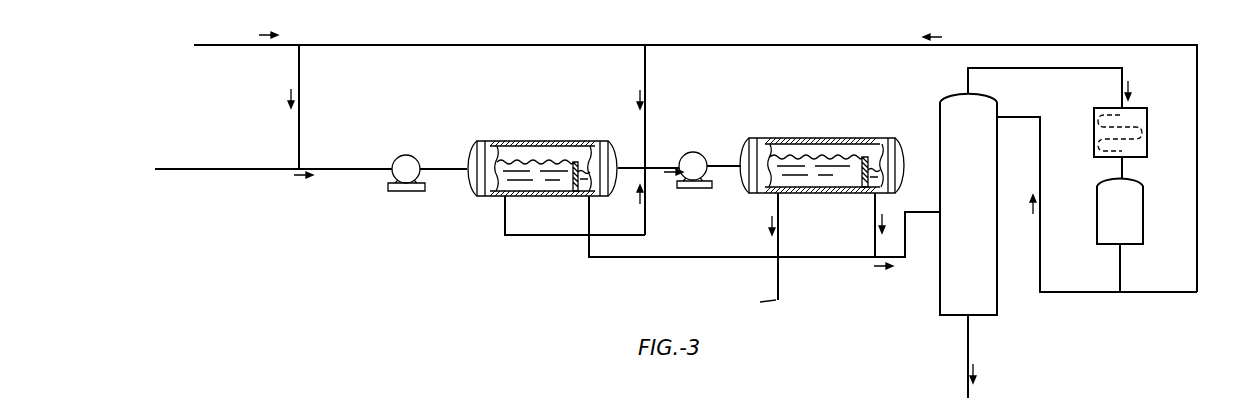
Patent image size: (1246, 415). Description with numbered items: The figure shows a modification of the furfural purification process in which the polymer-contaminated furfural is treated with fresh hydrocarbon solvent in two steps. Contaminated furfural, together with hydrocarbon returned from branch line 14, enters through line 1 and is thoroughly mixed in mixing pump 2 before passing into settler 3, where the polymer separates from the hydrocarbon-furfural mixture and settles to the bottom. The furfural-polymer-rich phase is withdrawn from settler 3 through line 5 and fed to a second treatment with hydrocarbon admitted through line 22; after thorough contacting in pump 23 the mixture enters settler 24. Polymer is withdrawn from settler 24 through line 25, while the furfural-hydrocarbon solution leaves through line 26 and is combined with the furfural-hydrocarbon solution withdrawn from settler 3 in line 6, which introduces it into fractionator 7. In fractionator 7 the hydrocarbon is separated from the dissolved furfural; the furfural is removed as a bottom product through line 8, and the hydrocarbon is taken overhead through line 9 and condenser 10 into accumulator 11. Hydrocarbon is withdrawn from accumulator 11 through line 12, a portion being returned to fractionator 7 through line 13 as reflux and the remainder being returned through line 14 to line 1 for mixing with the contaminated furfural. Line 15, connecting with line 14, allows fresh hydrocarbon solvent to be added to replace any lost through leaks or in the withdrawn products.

The line 1 is at (205, 170).
The mixing pump 2 is at (416, 158).
The settler 3 is at (538, 141).
The line 5 is at (538, 237).
The line 6 is at (685, 258).
The fractionator 7 is at (935, 285).
The line 8 is at (967, 341).
The line 9 is at (1085, 70).
The condenser 10 is at (1147, 130).
The accumulator 11 is at (1097, 198).
The line 12 is at (1118, 255).
The line 13 is at (1077, 293).
The line 14 is at (300, 123).
The line 15 is at (239, 45).
The line 22 is at (648, 133).
The pump 23 is at (702, 188).
The settler 24 is at (840, 139).
The line 25 is at (778, 238).
The line 26 is at (873, 204).